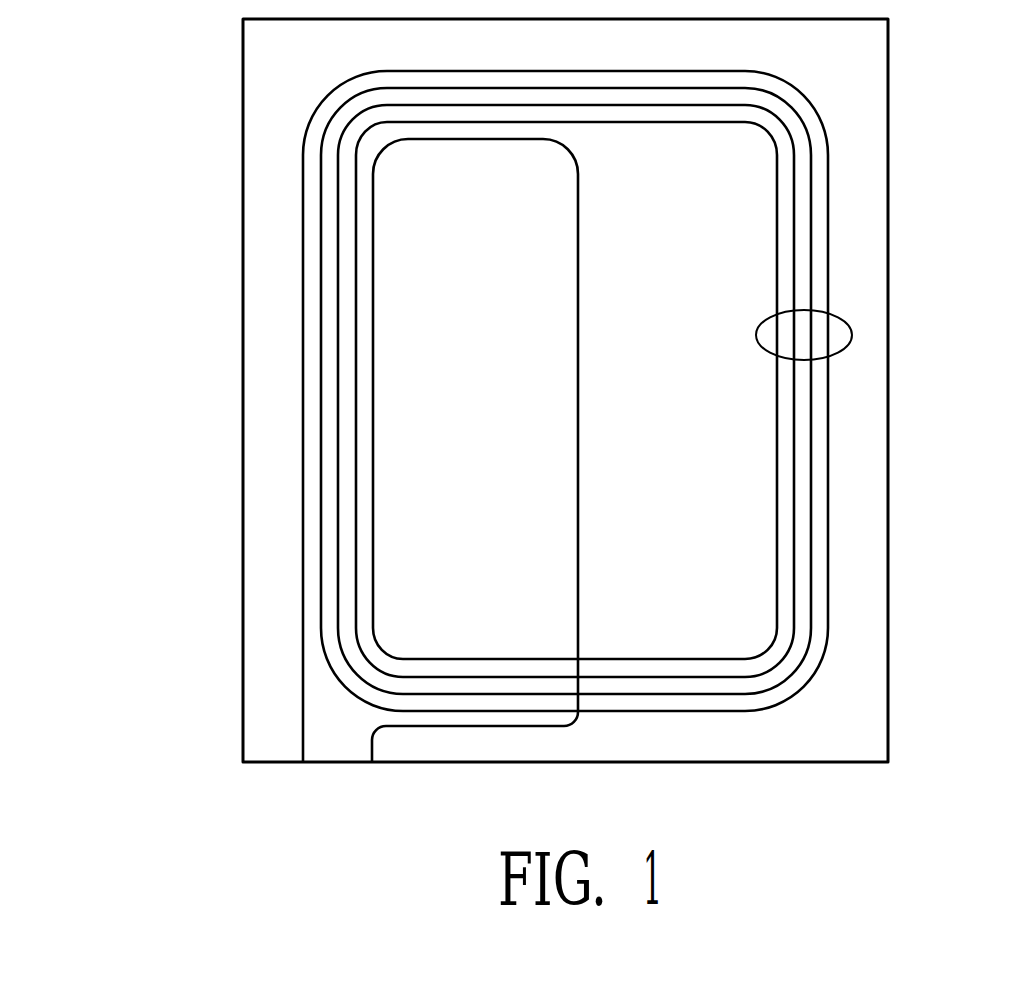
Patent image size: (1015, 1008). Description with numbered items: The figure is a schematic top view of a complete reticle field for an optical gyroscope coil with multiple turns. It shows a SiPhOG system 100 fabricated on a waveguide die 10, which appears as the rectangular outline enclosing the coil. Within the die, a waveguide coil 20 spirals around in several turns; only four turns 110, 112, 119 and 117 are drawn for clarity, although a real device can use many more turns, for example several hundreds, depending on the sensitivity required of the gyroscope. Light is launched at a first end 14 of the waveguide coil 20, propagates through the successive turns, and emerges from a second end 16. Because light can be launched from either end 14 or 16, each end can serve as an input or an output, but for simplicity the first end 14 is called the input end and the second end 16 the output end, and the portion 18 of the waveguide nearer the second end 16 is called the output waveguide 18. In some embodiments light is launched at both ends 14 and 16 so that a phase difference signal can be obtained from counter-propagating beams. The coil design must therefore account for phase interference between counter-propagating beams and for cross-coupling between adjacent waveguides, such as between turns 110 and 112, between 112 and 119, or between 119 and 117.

The SiPhOG system 100 is at (173, 130).
The waveguide die 10 is at (888, 112).
The first end 14 is at (303, 762).
The second end 16 is at (372, 762).
The output waveguide 18 is at (578, 558).
The waveguide coil 20 is at (852, 325).
The turn 110 is at (778, 432).
The turn 112 is at (795, 480).
The turn 119 is at (813, 530).
The turn 117 is at (830, 582).